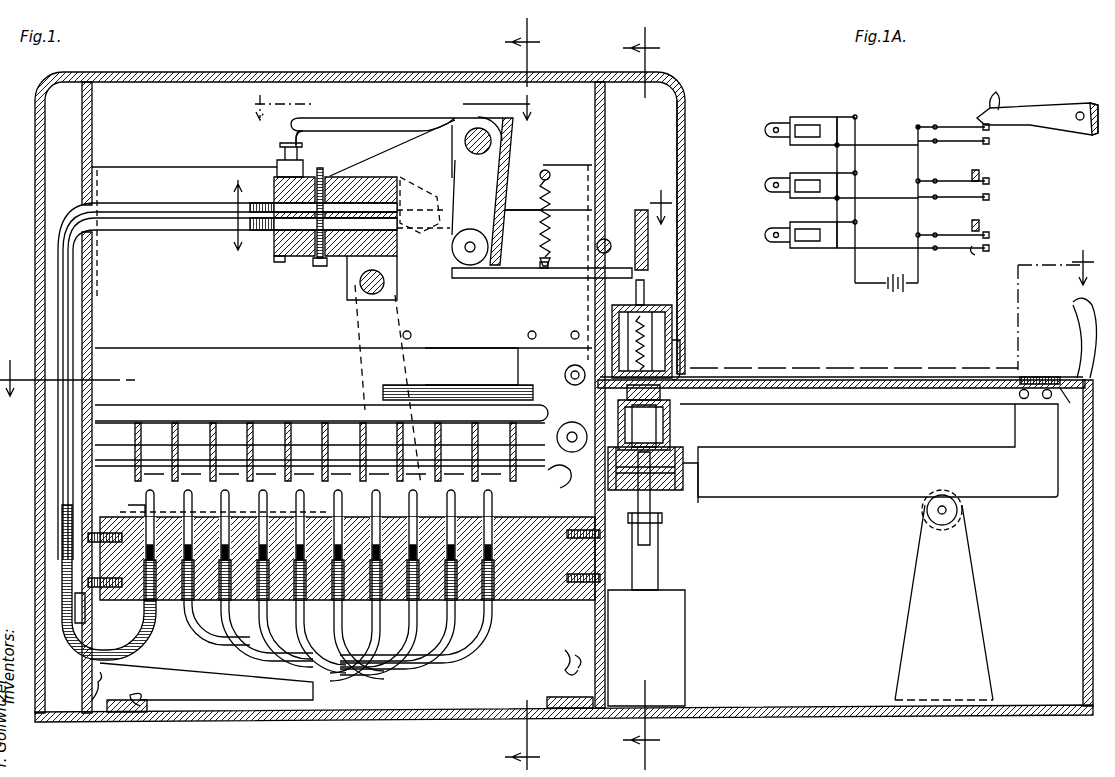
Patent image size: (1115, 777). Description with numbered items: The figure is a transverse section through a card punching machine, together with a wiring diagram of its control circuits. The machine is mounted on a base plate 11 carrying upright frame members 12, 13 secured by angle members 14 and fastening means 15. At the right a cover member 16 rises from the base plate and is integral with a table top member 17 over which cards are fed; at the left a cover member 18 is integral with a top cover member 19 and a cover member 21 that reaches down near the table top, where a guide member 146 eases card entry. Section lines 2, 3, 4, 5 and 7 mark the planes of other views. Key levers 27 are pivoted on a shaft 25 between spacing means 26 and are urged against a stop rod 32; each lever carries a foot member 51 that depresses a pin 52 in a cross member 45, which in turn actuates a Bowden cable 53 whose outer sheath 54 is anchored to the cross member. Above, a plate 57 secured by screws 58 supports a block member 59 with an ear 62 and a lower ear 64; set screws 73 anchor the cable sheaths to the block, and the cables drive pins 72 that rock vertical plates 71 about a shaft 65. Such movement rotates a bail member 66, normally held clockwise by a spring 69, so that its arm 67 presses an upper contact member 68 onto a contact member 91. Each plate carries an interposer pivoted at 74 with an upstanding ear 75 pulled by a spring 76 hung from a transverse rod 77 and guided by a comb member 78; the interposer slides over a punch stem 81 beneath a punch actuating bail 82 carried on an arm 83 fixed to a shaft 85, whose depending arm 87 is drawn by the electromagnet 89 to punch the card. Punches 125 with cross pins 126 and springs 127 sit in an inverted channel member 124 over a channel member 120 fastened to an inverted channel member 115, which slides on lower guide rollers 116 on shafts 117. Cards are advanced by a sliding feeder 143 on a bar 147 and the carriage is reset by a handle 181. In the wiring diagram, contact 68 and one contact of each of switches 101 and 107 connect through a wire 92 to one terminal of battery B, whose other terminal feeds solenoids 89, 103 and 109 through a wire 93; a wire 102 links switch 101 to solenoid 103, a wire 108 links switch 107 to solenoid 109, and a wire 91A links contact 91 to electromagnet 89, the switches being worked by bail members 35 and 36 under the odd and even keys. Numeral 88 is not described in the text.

In FIG. 1, the top cover member 19 is at (217, 74).
In FIG. 1, the cover member 21 is at (686, 204).
In FIG. 1, the base plate 11 is at (758, 718).
In FIG. 1, the cover member 16 is at (1083, 541).
In FIG. 1, the cover member 18 is at (40, 428).
In FIG. 1, the table top member 17 is at (746, 394).
In FIG. 1, the sliding feeder 143 is at (1050, 376).
In FIG. 1, the handle 181 is at (1078, 300).
In FIG. 1, the bar 147 is at (1036, 500).
In FIG. 1, the section line 5 is at (537, 394).
In FIG. 1, the section line 3 is at (652, 401).
In FIG. 1, the section line 7 is at (389, 107).
In FIG. 1, the section line 4 is at (449, 209).
In FIG. 1, the section line 2 is at (547, 315).
In FIG. 1, the screws 58 is at (100, 186).
In FIG. 1, the plate 57 is at (172, 166).
In FIG. 1, the set screws 73 is at (326, 174).
In FIG. 1, the contact member 91 is at (278, 156).
In FIG. 1A, the contact member 91 is at (971, 150).
In FIG. 1, the upper contact member 68 is at (286, 146).
In FIG. 1A, the upper contact member 68 is at (972, 127).
In FIG. 1, the block member 59 is at (276, 260).
In FIG. 1, the ear 62 is at (432, 118).
In FIG. 1, the arm 67 is at (330, 118).
In FIG. 1A, the arm 67 is at (992, 106).
In FIG. 1, the shaft 65 is at (492, 137).
In FIG. 1, the bail member 66 is at (512, 141).
In FIG. 1A, the bail member 66 is at (1090, 135).
In FIG. 1, the pins 72 is at (346, 180).
In FIG. 1, the spring 69 is at (442, 205).
In FIG. 1, the vertical plates 71 is at (495, 222).
In FIG. 1, the interposer pivot 74 is at (489, 247).
In FIG. 1, the arm 83 is at (520, 209).
In FIG. 1, the transverse rod 77 is at (540, 176).
In FIG. 1, the spring 76 is at (550, 226).
In FIG. 1, the upstanding ear 75 is at (551, 258).
In FIG. 1, the comb member 78 is at (607, 239).
In FIG. 1, the punch actuating bail 82 is at (649, 243).
In FIG. 1, the ear 64 is at (348, 308).
In FIG. 1, the shaft 85 is at (384, 284).
In FIG. 1, the depending arm 87 is at (354, 300).
In FIG. 1, the stop rod 32 is at (202, 405).
In FIG. 1, the punches 125 is at (574, 365).
In FIG. 1, the control levers 27 is at (320, 452).
In FIG. 1, the shaft 25 is at (570, 453).
In FIG. 1, the spacing means 26 is at (548, 472).
In FIG. 1, the cross member 45 is at (527, 601).
In FIG. 1, the foot member 51 is at (150, 485).
In FIG. 1, the Bowden cable 53 is at (134, 503).
In FIG. 1, the pin 52 is at (164, 507).
In FIG. 1, the outer sheath 54 is at (141, 626).
In FIG. 1, the electromagnet 89 is at (316, 694).
In FIG. 1A, the electromagnet 89 is at (812, 144).
In FIG. 1, the tube group 88 is at (416, 676).
In FIG. 1, the frame member 12 is at (92, 664).
In FIG. 1, the angle members 14 is at (106, 722).
In FIG. 1, the fastening means 15 is at (88, 722).
In FIG. 1, the frame member 13 is at (606, 632).
In FIG. 1, the lower guide rollers 116 is at (660, 508).
In FIG. 1, the shafts 117 is at (699, 470).
In FIG. 1, the inverted channel member 115 is at (672, 429).
In FIG. 1, the inverted channel member 124 is at (673, 310).
In FIG. 1, the cross pin 126 is at (668, 318).
In FIG. 1, the compressed spring 127 is at (653, 332).
In FIG. 1, the channel member 120 is at (681, 360).
In FIG. 1, the guide member 146 is at (690, 372).
In FIG. 1, the punch stem 81 is at (645, 290).
In FIG. 1A, the solenoid 103 is at (812, 196).
In FIG. 1A, the solenoid 109 is at (812, 250).
In FIG. 1A, the wire 91A is at (906, 150).
In FIG. 1A, the wire 92 is at (926, 268).
In FIG. 1A, the wire 93 is at (855, 286).
In FIG. 1A, the battery B is at (904, 290).
In FIG. 1A, the wire 108 is at (866, 248).
In FIG. 1A, the bail member 35 is at (980, 175).
In FIG. 1A, the bail member 36 is at (980, 227).
In FIG. 1A, the switch 101 is at (986, 198).
In FIG. 1A, the wire 102 is at (903, 200).
In FIG. 1A, the switch 107 is at (986, 250).